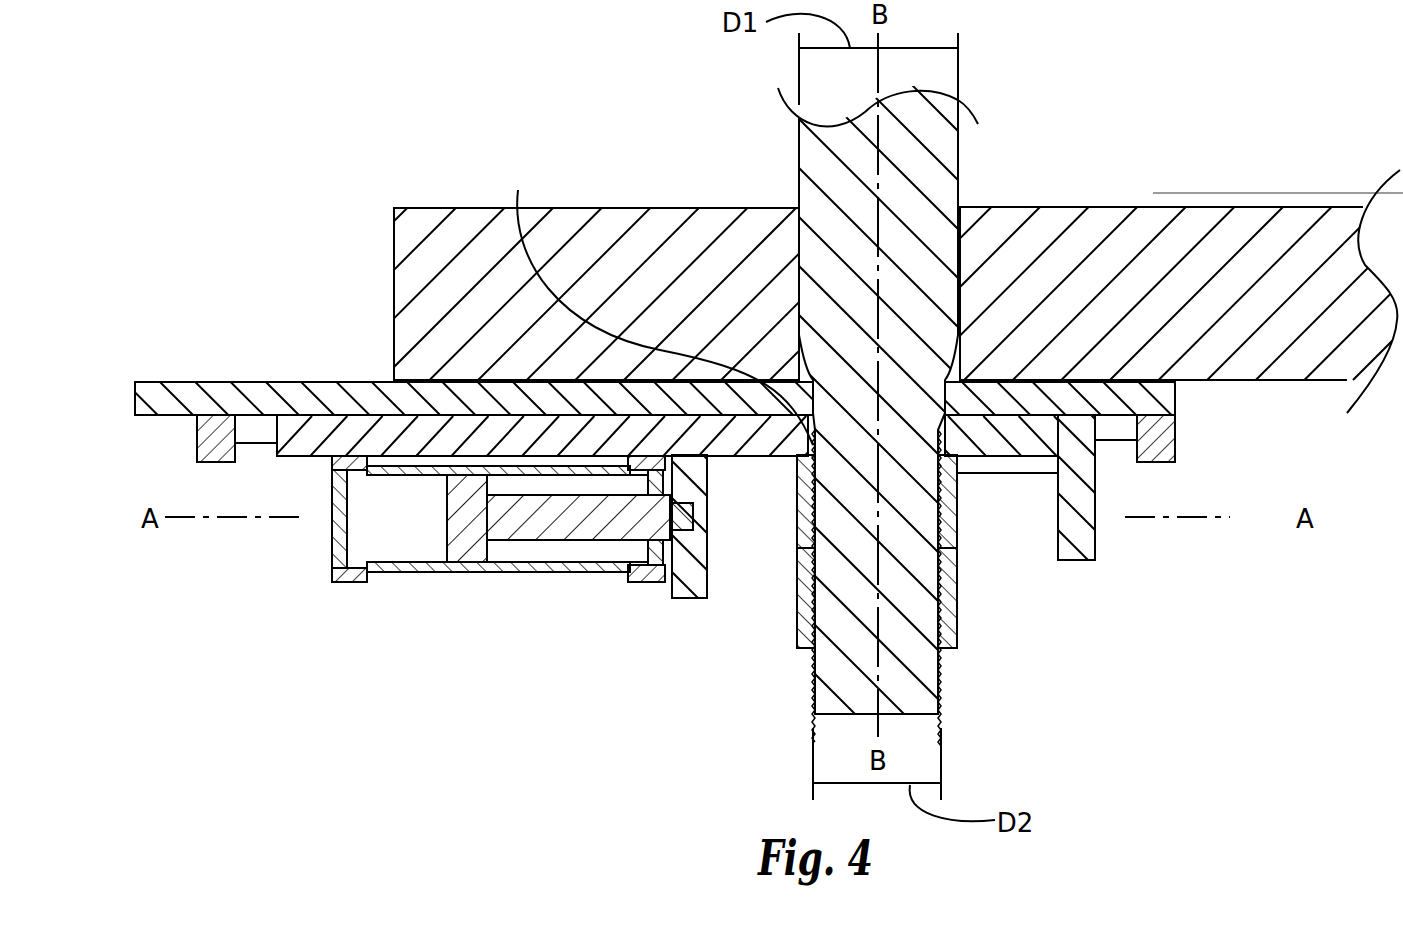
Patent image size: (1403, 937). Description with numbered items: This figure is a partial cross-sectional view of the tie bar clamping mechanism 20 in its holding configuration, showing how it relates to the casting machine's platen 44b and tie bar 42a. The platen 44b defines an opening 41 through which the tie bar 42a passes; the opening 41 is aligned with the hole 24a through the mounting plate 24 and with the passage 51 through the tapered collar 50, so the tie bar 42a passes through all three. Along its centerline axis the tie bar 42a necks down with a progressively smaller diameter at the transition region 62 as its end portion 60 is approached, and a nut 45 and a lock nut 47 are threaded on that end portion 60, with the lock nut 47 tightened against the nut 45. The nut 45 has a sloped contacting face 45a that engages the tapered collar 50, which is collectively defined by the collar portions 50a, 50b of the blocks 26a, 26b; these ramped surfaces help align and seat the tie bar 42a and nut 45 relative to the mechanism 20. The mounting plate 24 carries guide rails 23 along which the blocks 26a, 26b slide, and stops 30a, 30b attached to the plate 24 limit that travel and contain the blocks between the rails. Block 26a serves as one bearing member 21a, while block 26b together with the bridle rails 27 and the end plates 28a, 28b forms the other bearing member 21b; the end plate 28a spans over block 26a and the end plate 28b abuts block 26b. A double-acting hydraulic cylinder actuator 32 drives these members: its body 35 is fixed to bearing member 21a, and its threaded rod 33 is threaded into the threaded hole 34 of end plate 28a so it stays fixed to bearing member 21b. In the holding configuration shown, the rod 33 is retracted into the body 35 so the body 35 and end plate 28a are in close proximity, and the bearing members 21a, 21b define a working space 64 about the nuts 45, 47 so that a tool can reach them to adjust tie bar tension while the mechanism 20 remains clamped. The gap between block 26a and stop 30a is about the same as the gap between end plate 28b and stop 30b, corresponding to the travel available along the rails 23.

The mechanism 20 is at (462, 590).
The bearing member 21a is at (278, 455).
The bearing member 21b is at (1096, 560).
The guide rails 23 is at (250, 440).
The mounting plate 24 is at (185, 382).
The hole 24a is at (958, 393).
The block 26a is at (305, 457).
The block 26b is at (1012, 473).
The bridle rails 27 is at (720, 457).
The end plate 28a is at (695, 600).
The end plate 28b is at (1097, 515).
The stop 30a is at (215, 462).
The stop 30b is at (1160, 462).
The double-acting hydraulic cylinder actuator 32 is at (462, 573).
The threaded plunger rod 33 is at (690, 590).
The threaded hole 34 is at (672, 560).
The body 35 is at (330, 550).
The opening 41 is at (805, 227).
The tie bar 42a is at (958, 162).
The platen 44b is at (395, 290).
The nut 45 is at (812, 475).
The sloped contacting face 45a is at (654, 301).
The lock nut 47 is at (797, 577).
The tapered collar 50 is at (958, 457).
The tapered collar portion 50a is at (805, 457).
The tapered collar portion 50b is at (957, 470).
The passage 51 is at (948, 422).
The end portion 60 is at (813, 720).
The transition region 62 is at (962, 345).
The working space 64 is at (798, 650).